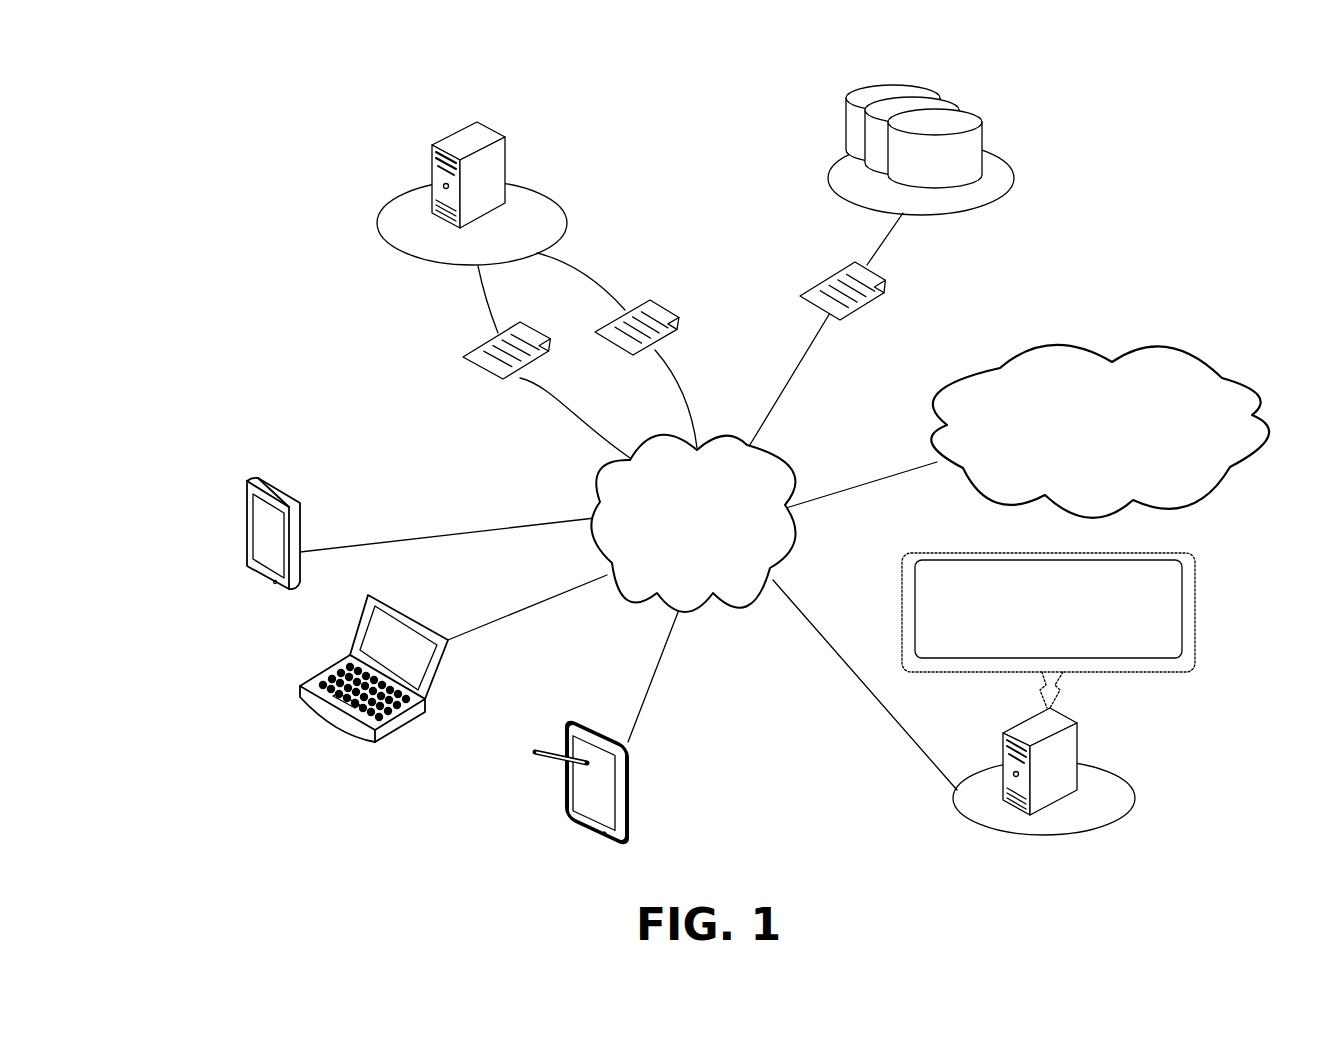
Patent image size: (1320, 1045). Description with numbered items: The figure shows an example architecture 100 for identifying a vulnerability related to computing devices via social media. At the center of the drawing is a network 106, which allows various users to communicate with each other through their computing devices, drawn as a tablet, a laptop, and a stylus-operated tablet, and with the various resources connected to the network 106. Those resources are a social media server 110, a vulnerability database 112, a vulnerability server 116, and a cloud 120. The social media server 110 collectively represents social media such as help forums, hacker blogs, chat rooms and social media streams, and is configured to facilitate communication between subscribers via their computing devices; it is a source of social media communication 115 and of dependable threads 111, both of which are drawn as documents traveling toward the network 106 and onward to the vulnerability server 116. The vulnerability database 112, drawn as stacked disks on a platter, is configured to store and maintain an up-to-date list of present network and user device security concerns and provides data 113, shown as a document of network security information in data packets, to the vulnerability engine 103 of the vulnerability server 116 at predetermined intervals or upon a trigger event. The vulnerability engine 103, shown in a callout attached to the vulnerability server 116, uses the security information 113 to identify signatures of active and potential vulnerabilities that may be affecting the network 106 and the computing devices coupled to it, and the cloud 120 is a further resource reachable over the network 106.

The architecture 100 is at (124, 58).
The vulnerability engine 103 is at (1048, 630).
The network 106 is at (596, 498).
The social media server 110 is at (513, 182).
The dependable threads 111 is at (660, 347).
The vulnerability database 112 is at (1005, 148).
The data 113 is at (850, 308).
The social media communication 115 is at (490, 340).
The vulnerability server 116 is at (1122, 780).
The cloud 120 is at (1212, 495).